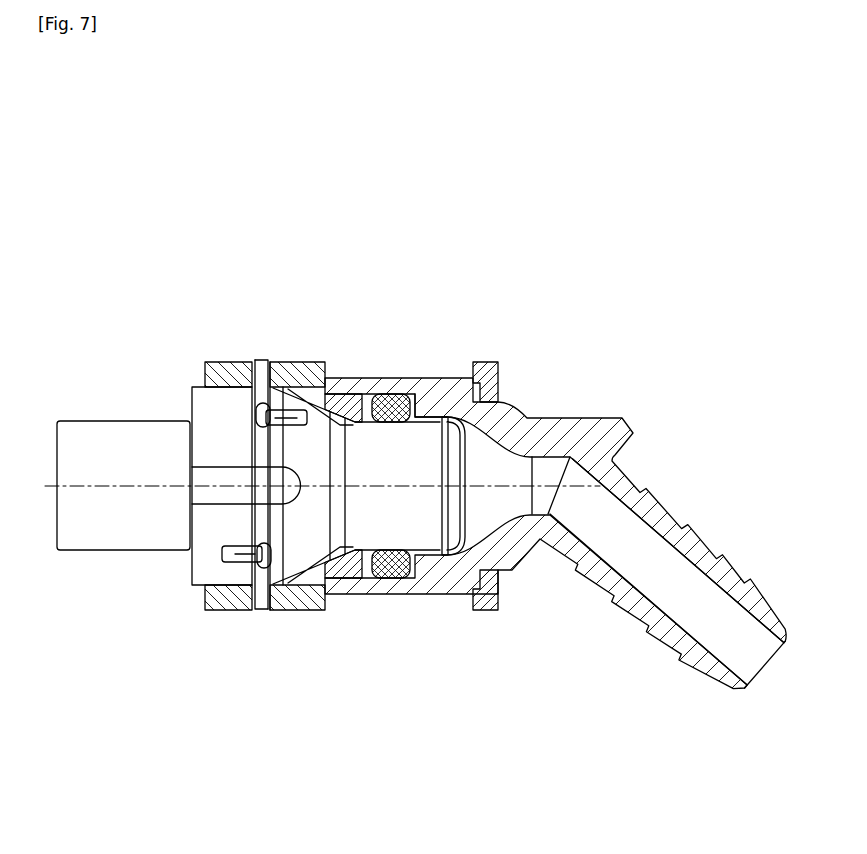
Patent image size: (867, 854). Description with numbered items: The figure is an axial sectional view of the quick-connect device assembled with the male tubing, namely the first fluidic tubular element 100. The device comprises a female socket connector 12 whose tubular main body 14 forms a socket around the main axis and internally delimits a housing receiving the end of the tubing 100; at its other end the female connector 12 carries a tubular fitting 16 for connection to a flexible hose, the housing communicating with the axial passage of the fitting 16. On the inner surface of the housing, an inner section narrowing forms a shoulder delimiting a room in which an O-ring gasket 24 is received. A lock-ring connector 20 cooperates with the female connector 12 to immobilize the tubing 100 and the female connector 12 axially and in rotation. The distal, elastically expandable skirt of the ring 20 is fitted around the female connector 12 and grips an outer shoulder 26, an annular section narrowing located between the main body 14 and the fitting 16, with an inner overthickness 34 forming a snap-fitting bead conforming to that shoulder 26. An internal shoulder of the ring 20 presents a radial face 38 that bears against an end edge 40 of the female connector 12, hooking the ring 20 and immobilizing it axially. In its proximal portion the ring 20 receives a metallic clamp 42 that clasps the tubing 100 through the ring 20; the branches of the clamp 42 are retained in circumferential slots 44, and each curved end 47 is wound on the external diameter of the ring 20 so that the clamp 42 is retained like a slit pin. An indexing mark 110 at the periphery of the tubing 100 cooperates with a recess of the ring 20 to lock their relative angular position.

The female socket connector 12 is at (553, 418).
The main body 14 is at (423, 575).
The tubular fitting 16 is at (697, 665).
The lock-ring connector 20 is at (302, 361).
The O-ring gasket 24 is at (390, 398).
The outer shoulder 26 is at (458, 405).
The inner overthickness 34 is at (486, 362).
The radial face 38 is at (338, 400).
The end edge 40 is at (300, 610).
The metallic clamp 42 is at (233, 565).
The circumferential slots 44 is at (261, 606).
The curved end 47 is at (270, 360).
The first fluidic tubular element 100 is at (152, 453).
The indexing mark 110 is at (210, 490).